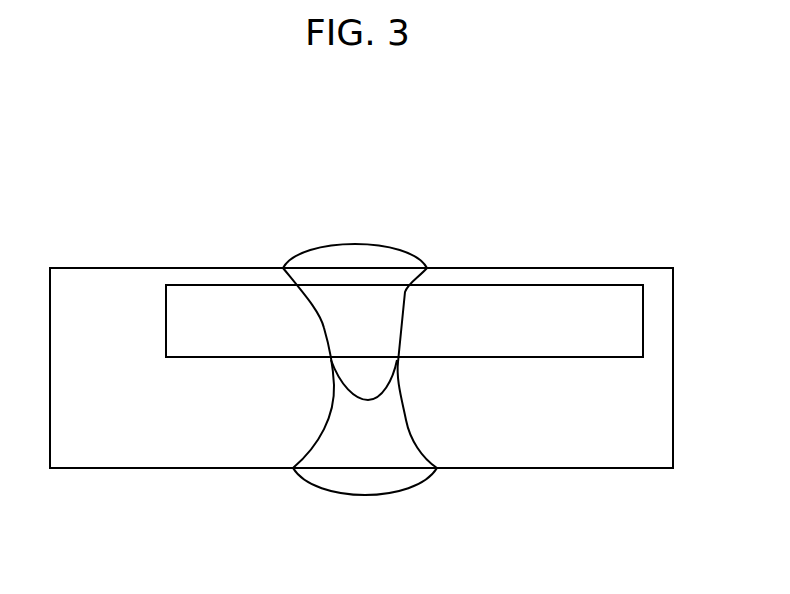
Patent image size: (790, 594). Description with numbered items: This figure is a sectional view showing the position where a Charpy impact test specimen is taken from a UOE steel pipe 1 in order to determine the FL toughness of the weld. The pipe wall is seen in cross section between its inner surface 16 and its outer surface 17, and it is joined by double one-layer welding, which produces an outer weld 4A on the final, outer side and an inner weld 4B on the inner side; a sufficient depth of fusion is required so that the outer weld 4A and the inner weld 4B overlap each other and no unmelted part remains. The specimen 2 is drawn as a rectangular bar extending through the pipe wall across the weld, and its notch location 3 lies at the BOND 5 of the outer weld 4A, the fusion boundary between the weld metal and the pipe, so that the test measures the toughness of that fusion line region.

The UOE steel pipe 1 is at (90, 290).
The specimen 2 is at (628, 285).
The notch location 3 is at (407, 323).
The outer weld 4A is at (350, 247).
The inner weld 4B is at (365, 477).
The BOND 5 is at (318, 332).
The inner surface 16 is at (446, 246).
The outer surface 17 is at (444, 493).